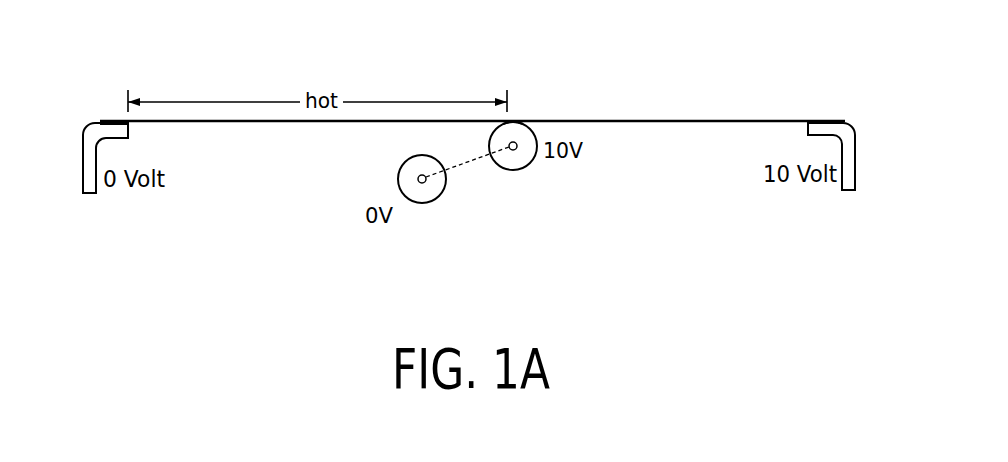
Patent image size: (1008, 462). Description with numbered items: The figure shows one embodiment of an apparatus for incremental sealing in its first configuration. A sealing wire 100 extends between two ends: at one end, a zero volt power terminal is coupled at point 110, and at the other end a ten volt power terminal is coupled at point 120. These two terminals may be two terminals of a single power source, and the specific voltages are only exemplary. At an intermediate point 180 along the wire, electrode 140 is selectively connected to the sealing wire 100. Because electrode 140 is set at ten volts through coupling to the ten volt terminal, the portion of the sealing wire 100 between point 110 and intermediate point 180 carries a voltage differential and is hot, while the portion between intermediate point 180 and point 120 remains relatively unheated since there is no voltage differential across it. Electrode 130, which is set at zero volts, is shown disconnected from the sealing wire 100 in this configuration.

The sealing wire 100 is at (619, 120).
The point 110 is at (104, 111).
The point 120 is at (815, 108).
The electrode 130 is at (425, 201).
The electrode 140 is at (515, 168).
The intermediate point 180 is at (515, 120).